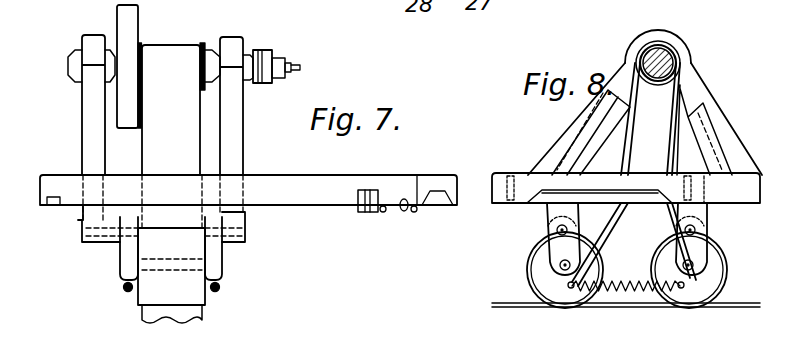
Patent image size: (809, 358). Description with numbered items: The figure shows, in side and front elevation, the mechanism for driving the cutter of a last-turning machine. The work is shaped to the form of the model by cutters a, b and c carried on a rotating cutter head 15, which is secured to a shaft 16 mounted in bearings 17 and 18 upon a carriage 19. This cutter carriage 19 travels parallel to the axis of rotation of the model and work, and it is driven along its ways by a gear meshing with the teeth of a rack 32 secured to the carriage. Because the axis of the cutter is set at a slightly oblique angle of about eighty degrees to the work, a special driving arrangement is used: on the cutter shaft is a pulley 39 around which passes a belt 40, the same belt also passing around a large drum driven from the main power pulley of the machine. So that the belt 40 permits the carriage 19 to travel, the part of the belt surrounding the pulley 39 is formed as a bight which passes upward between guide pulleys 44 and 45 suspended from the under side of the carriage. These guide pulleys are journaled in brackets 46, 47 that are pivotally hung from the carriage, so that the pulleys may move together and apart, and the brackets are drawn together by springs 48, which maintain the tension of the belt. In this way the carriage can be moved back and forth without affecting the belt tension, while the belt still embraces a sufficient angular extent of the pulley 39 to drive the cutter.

In FIG. 7, the rotating cutter head 15 is at (276, 57).
In FIG. 8, the shaft 16 is at (683, 52).
In FIG. 7, the bearing 17 is at (100, 50).
In FIG. 8, the bearing 17 is at (652, 36).
In FIG. 7, the bearing 18 is at (230, 45).
In FIG. 7, the cutter carriage 19 is at (282, 187).
In FIG. 8, the cutter carriage 19 is at (525, 177).
In FIG. 7, the rack 32 is at (382, 210).
In FIG. 7, the pulley 39 is at (203, 43).
In FIG. 8, the pulley 39 is at (670, 42).
In FIG. 7, the belt 40 is at (168, 330).
In FIG. 8, the belt 40 is at (532, 307).
In FIG. 8, the guide pulley 44 is at (527, 276).
In FIG. 8, the guide pulley 45 is at (728, 268).
In FIG. 7, the bracket 46 is at (128, 247).
In FIG. 8, the bracket 46 is at (560, 260).
In FIG. 8, the bracket 47 is at (690, 250).
In FIG. 7, the spring 48 is at (122, 288).
In FIG. 8, the spring 48 is at (630, 292).
In FIG. 7, the cutter a is at (288, 73).
In FIG. 7, the cutter b is at (290, 62).
In FIG. 7, the cutter c is at (297, 67).